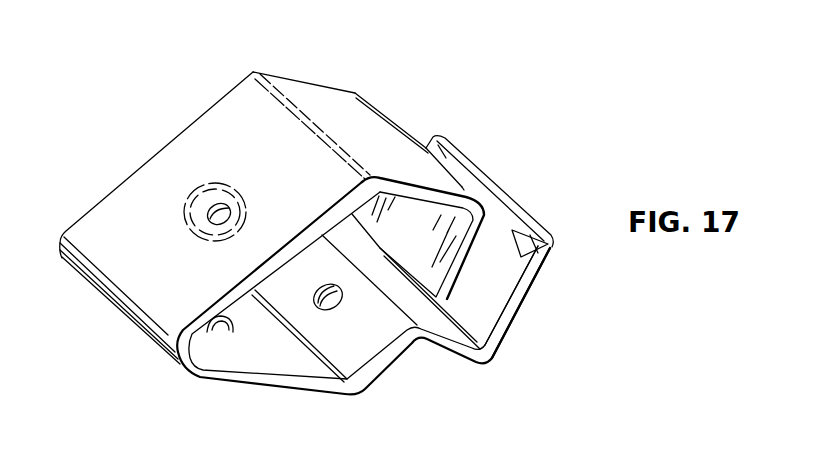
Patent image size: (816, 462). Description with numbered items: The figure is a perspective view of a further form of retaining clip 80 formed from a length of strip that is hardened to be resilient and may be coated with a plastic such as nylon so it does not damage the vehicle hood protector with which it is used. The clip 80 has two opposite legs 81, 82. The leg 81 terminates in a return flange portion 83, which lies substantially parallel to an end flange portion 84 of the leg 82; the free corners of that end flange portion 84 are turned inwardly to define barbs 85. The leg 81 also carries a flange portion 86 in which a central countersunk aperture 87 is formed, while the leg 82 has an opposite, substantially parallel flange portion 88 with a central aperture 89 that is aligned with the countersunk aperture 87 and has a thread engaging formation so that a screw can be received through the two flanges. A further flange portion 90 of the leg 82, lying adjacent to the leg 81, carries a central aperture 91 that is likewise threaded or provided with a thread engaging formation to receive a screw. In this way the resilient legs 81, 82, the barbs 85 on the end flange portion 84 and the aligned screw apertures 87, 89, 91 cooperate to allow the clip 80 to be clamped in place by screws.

The retaining clip 80 is at (485, 140).
The leg 81 is at (220, 72).
The leg 82 is at (268, 395).
The return flange portion 83 is at (478, 235).
The end flange portion 84 is at (520, 293).
The barbs 85 is at (552, 247).
The flange portion 86 is at (128, 210).
The central countersunk aperture 87 is at (212, 200).
The flange portion 88 is at (392, 365).
The central aperture 89 is at (333, 313).
The further flange portion 90 is at (212, 382).
The central aperture 91 is at (177, 362).